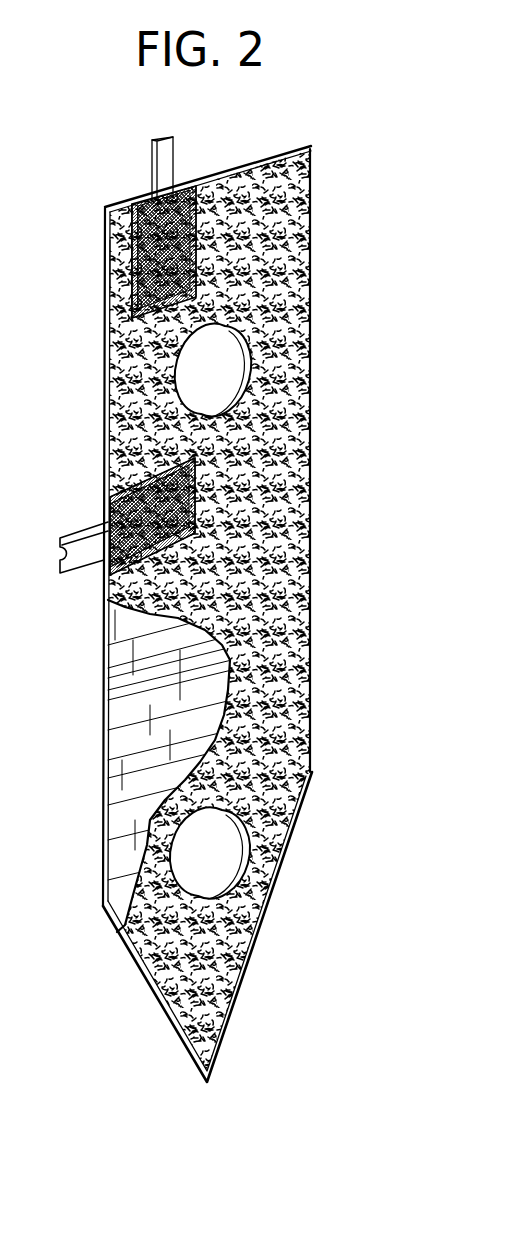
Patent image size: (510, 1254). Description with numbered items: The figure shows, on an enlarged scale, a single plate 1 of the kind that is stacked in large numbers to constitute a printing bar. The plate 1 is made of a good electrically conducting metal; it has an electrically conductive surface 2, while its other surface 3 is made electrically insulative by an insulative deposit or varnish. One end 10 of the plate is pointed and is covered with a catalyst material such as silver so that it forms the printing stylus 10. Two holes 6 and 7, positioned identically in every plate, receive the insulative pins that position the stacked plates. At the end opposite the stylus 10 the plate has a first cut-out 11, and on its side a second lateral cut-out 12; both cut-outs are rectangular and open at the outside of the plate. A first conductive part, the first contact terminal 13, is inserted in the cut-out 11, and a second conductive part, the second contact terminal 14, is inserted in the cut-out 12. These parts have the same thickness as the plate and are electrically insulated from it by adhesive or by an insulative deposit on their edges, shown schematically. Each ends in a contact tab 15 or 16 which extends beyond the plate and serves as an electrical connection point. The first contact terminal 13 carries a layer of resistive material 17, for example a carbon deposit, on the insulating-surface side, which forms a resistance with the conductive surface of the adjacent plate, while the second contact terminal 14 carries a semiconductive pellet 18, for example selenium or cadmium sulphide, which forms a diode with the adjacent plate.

The plate 1 is at (303, 148).
The electrically conductive surface 2 is at (130, 713).
The insulative surface 3 is at (303, 674).
The hole 6 is at (232, 388).
The hole 7 is at (226, 870).
The printing stylus 10 is at (172, 1032).
The first cut-out 11 is at (200, 225).
The second lateral cut-out 12 is at (173, 493).
The first contact terminal 13 is at (132, 208).
The second contact terminal 14 is at (110, 580).
The contact tab 15 is at (165, 177).
The contact tab 16 is at (92, 528).
The layer of resistive material 17 is at (123, 263).
The semiconductive pellet 18 is at (125, 468).